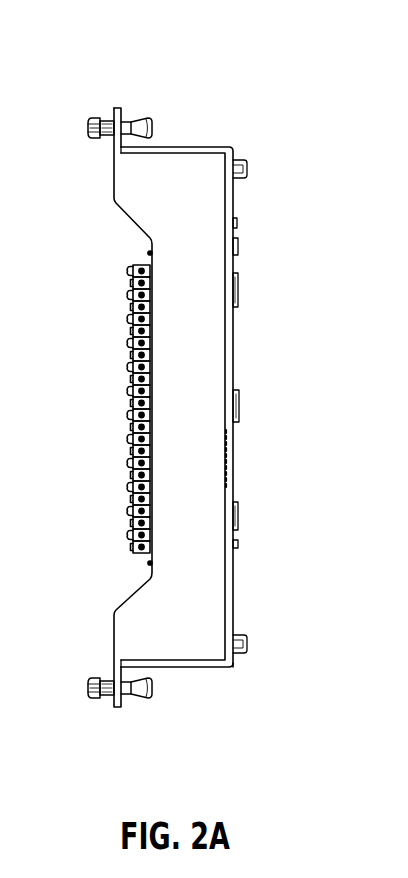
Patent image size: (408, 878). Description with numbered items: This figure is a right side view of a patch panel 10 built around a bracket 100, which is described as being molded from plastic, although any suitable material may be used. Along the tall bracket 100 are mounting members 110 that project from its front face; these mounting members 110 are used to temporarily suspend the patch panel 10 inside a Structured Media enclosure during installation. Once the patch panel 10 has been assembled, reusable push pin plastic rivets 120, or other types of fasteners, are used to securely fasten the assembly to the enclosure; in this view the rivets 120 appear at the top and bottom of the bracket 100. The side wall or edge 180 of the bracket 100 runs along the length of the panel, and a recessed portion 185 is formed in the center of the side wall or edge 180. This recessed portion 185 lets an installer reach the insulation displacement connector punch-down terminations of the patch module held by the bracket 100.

The patch panel 10 is at (233, 62).
The bracket 100 is at (200, 667).
The mounting members 110 is at (249, 172).
The reusable push pin plastic rivets 120 is at (153, 128).
The side wall or edge 180 is at (135, 201).
The recessed portion 185 is at (118, 398).